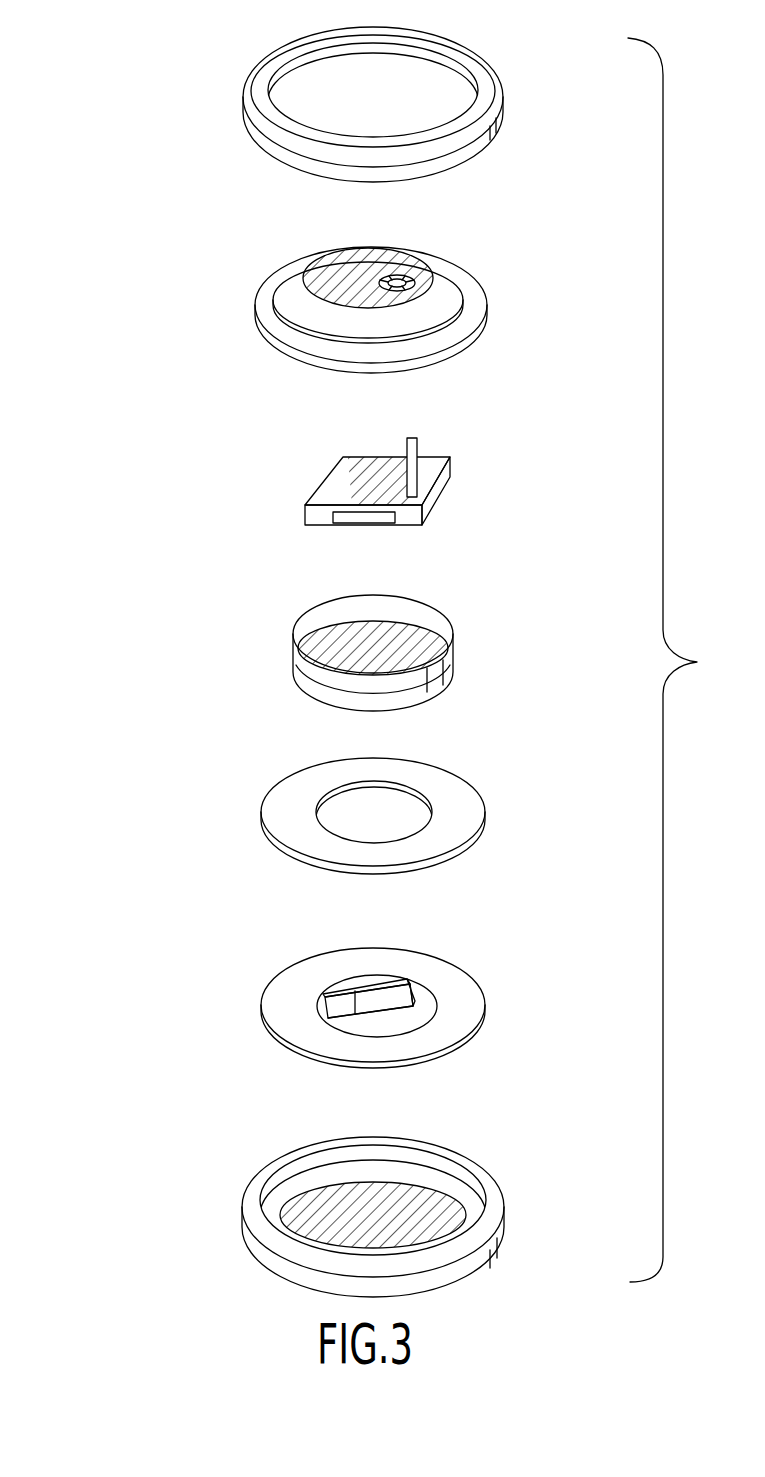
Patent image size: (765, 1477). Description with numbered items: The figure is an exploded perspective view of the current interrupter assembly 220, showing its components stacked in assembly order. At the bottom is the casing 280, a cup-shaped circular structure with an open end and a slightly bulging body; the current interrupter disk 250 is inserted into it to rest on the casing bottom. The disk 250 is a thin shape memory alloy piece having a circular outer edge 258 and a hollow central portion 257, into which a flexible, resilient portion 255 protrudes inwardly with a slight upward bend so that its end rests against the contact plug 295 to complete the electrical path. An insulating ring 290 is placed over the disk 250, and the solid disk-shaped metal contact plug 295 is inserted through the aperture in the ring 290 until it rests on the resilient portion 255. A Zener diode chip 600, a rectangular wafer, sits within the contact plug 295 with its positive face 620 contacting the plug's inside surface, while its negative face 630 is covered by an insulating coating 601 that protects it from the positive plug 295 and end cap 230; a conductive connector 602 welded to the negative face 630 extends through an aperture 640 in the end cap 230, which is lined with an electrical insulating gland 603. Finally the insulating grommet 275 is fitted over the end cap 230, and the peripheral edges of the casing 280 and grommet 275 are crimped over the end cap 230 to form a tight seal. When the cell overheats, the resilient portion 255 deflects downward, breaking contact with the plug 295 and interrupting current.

The current interrupter assembly 220 is at (148, 252).
The insulating grommet 275 is at (500, 78).
The end cap 230 is at (488, 277).
The electrical insulating gland 603 is at (393, 278).
The aperture 640 is at (403, 280).
The Zener diode chip 600 is at (374, 507).
The insulating coating 601 is at (438, 485).
The conductive connector 602 is at (418, 445).
The negative face 630 is at (353, 505).
The positive face 620 is at (343, 527).
The contact plug 295 is at (435, 645).
The insulating ring 290 is at (426, 796).
The current interrupter disk 250 is at (378, 1004).
The flexible resilient portion 255 is at (426, 1004).
The hollow central portion 257 is at (432, 998).
The outer edge 258 is at (453, 1033).
The casing 280 is at (507, 1217).